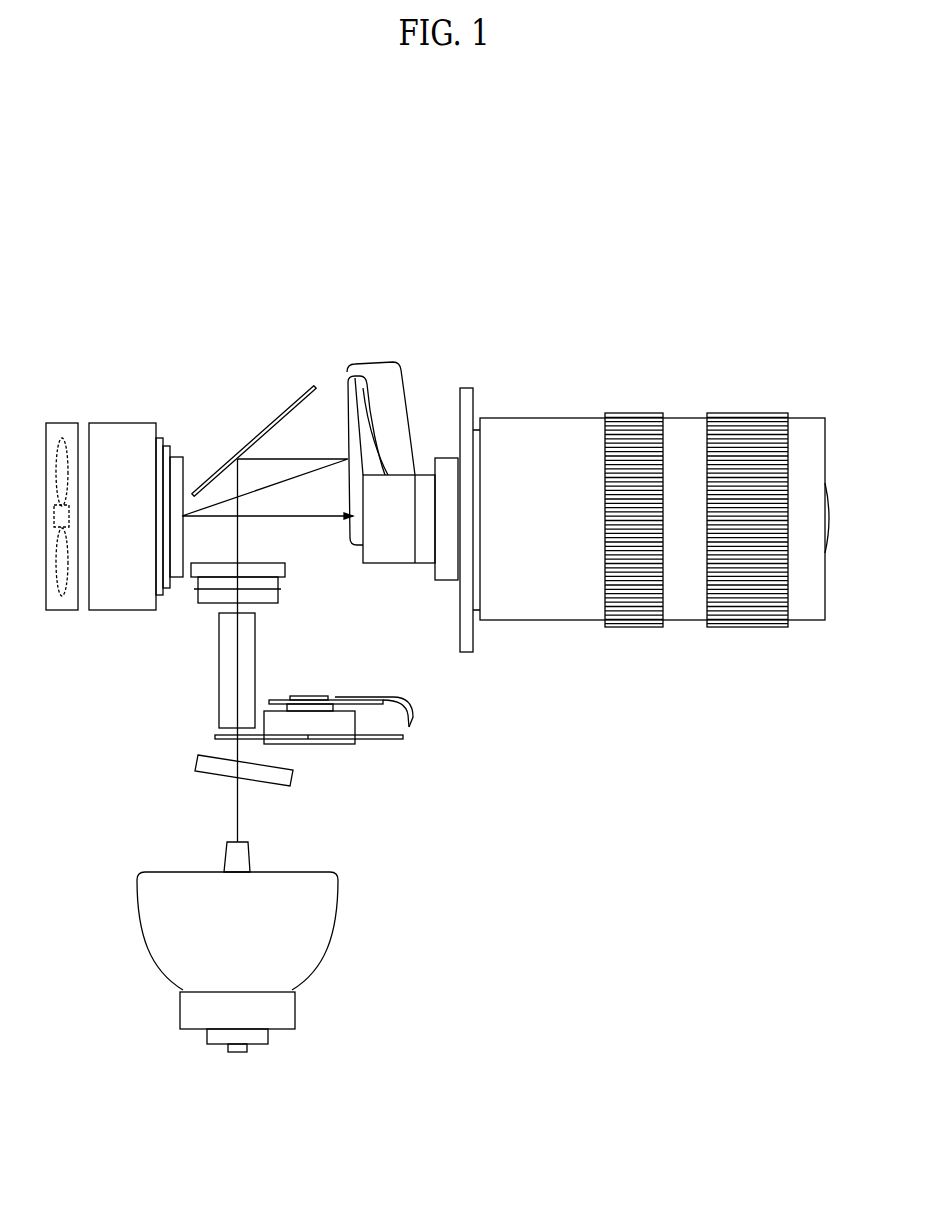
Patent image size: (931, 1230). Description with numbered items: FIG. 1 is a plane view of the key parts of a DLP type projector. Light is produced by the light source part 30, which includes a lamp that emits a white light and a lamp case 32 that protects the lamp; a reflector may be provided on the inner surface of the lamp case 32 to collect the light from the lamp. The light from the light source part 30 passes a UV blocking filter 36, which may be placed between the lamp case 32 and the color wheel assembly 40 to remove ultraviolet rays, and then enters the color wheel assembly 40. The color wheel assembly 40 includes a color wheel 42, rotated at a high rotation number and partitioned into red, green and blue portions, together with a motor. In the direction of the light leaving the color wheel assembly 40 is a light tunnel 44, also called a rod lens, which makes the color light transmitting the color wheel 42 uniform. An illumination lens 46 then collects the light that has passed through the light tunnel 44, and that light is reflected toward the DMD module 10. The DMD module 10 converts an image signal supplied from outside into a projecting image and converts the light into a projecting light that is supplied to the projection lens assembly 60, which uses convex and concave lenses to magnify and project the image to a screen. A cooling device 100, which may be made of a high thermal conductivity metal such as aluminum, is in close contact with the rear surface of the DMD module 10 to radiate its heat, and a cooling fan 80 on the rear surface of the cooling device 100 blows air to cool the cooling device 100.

The DMD module 10 is at (175, 457).
The light source part 30 is at (205, 947).
The lamp case 32 is at (313, 965).
The ultraviolet ray (UV) blocking filter 36 is at (197, 760).
The color wheel assembly 40 is at (352, 752).
The color wheel 42 is at (382, 740).
The light tunnel 44 is at (256, 651).
The illumination lens 46 is at (283, 597).
The projection lens assembly 60 is at (820, 630).
The cooling fan 80 is at (62, 423).
The cooling device 100 is at (123, 423).